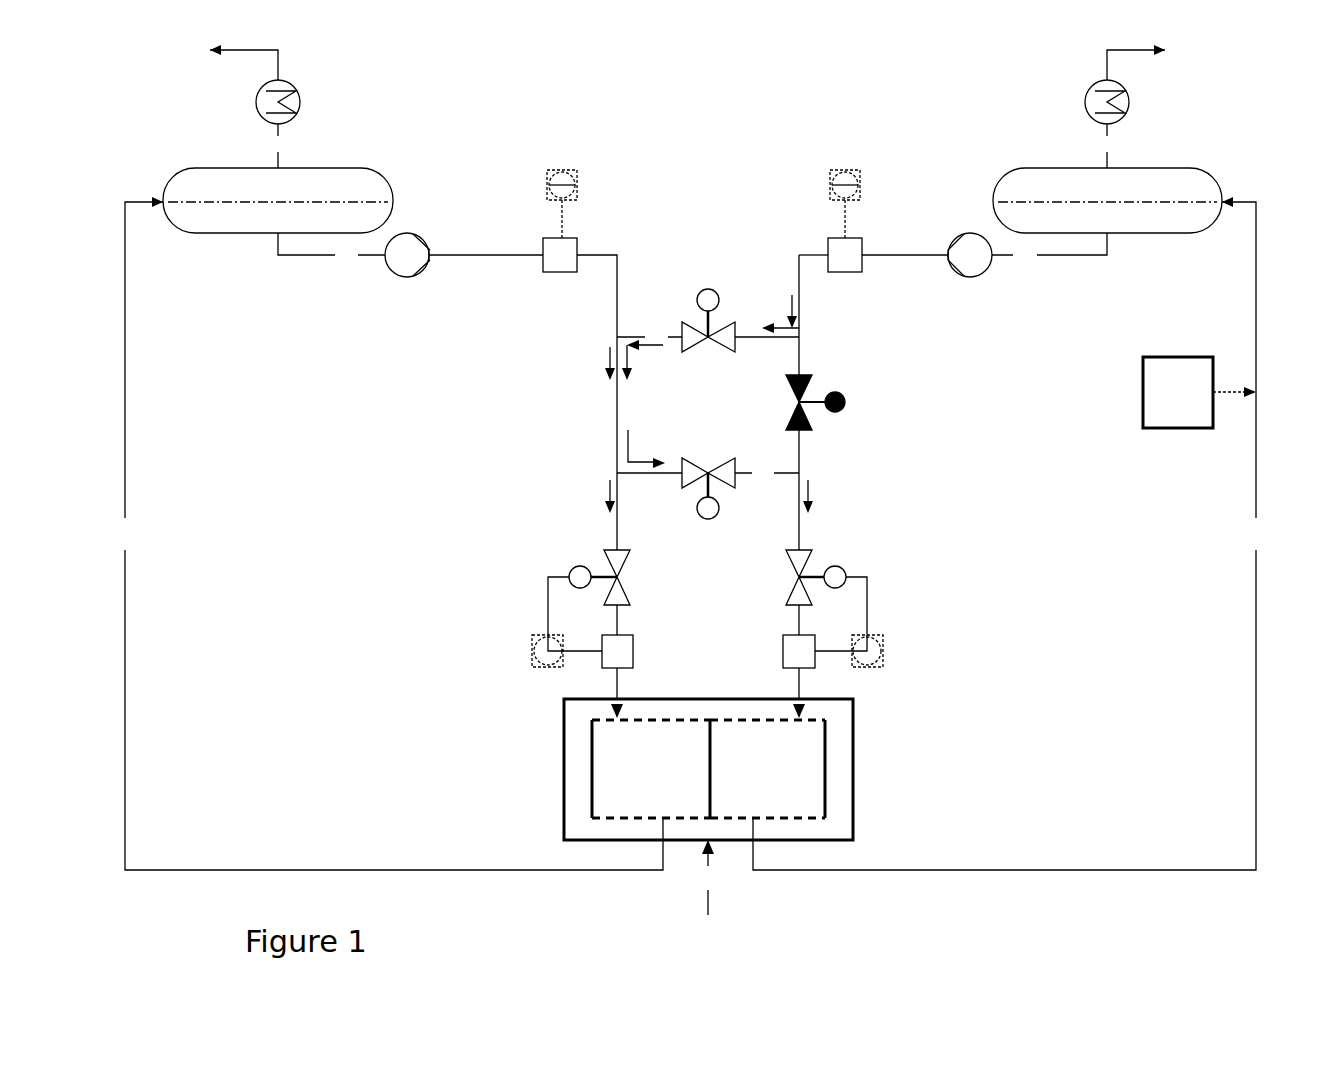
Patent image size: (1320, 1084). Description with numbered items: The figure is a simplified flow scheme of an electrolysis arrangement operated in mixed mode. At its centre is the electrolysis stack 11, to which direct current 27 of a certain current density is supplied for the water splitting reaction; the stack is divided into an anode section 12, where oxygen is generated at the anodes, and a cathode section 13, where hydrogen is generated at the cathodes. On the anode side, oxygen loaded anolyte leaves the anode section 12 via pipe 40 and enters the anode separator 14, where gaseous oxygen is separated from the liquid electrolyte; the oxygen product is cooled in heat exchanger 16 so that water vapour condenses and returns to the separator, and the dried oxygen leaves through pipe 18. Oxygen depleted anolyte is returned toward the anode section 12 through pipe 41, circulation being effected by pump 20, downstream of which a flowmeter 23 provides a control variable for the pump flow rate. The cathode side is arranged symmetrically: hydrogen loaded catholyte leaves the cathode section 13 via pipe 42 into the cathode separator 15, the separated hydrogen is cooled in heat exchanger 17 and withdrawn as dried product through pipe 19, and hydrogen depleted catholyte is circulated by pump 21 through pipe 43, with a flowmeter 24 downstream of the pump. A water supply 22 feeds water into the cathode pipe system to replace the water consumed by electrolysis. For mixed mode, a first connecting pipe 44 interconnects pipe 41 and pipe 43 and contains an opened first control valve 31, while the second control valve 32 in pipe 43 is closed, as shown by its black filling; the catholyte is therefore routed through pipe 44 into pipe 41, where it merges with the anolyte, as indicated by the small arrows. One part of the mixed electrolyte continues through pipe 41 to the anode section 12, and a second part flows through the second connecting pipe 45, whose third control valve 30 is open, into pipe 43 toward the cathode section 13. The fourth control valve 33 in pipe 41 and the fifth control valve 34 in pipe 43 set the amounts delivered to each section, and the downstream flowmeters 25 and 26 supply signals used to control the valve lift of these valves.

The electrolysis stack 11 is at (714, 769).
The anode section 12 is at (592, 768).
The cathode section 13 is at (825, 735).
The anode separator 14 is at (335, 165).
The cathode separator 15 is at (1180, 168).
The heat exchanger 16 is at (300, 97).
The heat exchanger 17 is at (1129, 97).
The pipe 18 is at (280, 146).
The pipe 19 is at (1109, 146).
The pump 20 is at (410, 274).
The pump 21 is at (960, 273).
The water supply 22 is at (1199, 392).
The flowmeter 23 is at (545, 270).
The flowmeter 24 is at (862, 245).
The flowmeter 25 is at (634, 650).
The flowmeter 26 is at (783, 646).
The direct current 27 is at (710, 877).
The third control valve 30 is at (700, 518).
The first control valve 31 is at (718, 297).
The second control valve 32 is at (845, 400).
The fourth control valve 33 is at (578, 566).
The fifth control valve 34 is at (838, 566).
The pipe 40 is at (389, 533).
The pipe 41 is at (331, 249).
The pipe 42 is at (1012, 533).
The pipe 43 is at (1049, 249).
The first connecting pipe 44 is at (708, 337).
The second connecting pipe 45 is at (708, 473).